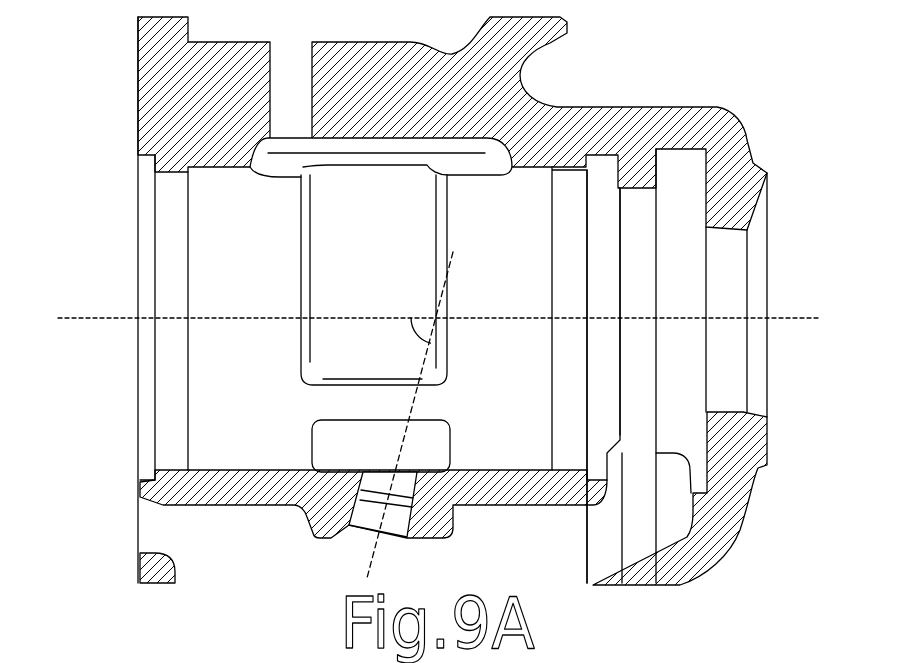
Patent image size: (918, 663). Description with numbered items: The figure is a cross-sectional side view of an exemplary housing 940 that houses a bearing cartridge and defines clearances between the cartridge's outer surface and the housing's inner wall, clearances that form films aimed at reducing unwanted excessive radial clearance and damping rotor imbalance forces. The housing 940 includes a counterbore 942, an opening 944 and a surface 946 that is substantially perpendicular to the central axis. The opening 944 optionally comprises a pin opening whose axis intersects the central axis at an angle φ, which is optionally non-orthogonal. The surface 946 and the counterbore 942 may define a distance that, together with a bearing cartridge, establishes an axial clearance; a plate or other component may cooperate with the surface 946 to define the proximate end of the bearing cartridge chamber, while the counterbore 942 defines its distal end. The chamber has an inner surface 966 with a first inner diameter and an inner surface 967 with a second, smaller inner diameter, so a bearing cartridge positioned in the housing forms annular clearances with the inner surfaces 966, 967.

The housing 940 is at (730, 58).
The counterbore 942 is at (618, 185).
The opening 944 is at (327, 540).
The surface 946 is at (138, 115).
The inner surface 966 is at (205, 167).
The inner surface 967 is at (155, 184).